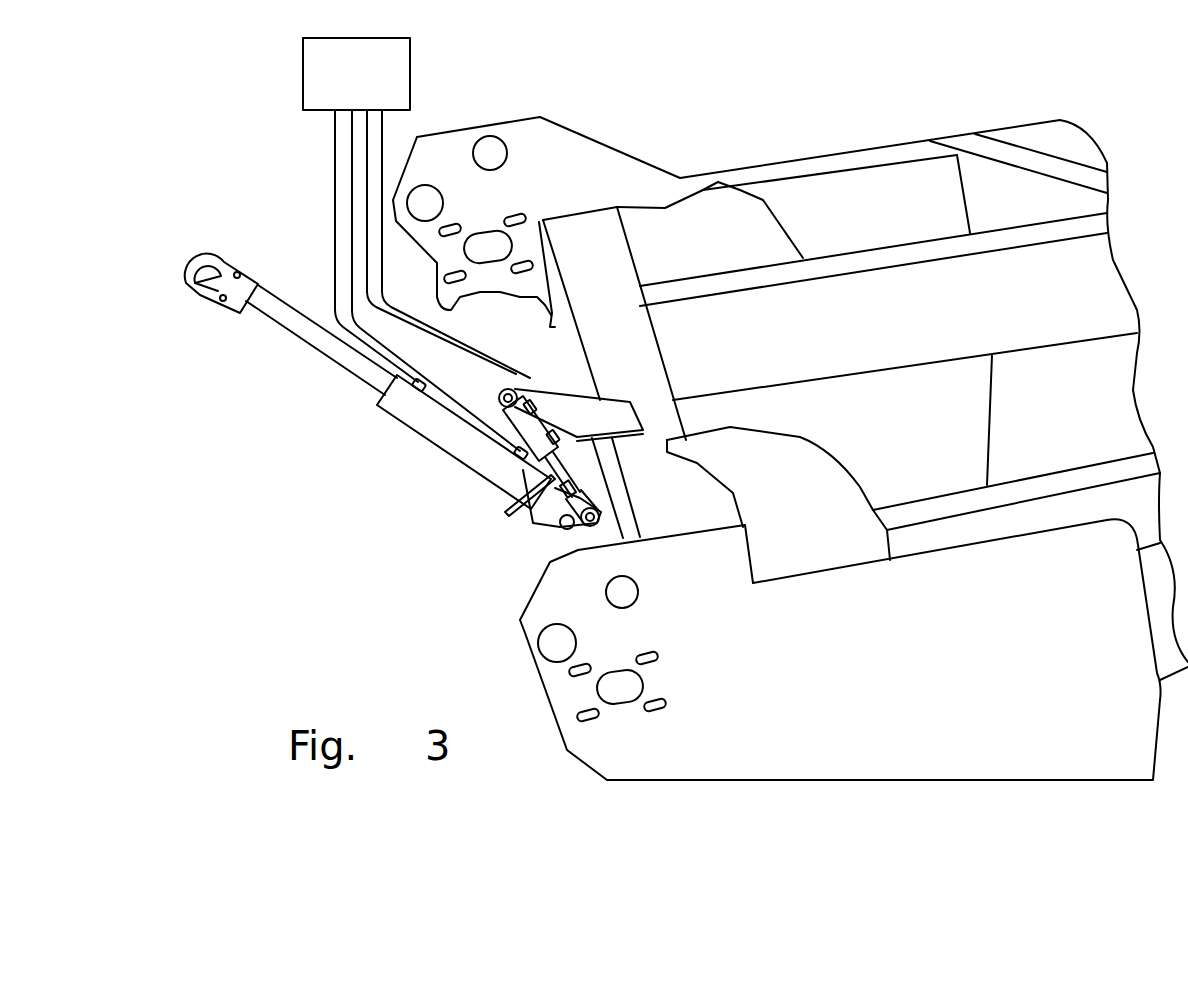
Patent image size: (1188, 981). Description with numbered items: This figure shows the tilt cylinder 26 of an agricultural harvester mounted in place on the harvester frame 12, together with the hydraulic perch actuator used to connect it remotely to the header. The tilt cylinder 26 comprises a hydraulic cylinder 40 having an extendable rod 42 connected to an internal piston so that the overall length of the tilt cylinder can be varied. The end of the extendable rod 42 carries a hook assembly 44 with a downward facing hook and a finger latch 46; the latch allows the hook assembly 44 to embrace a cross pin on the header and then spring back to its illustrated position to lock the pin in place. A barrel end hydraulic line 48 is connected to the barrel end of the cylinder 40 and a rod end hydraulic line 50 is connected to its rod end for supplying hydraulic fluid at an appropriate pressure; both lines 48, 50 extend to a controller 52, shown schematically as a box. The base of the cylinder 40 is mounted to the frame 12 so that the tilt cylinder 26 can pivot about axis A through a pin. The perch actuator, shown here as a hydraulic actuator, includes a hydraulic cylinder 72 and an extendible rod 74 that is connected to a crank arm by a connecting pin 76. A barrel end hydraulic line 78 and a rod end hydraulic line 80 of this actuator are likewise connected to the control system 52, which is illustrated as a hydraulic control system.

The frame 12 is at (810, 780).
The tilt cylinder 26 is at (354, 336).
The hydraulic cylinder 40 is at (440, 452).
The extendable rod 42 is at (312, 350).
The hook assembly 44 is at (201, 232).
The finger latch 46 is at (207, 293).
The barrel end hydraulic line 48 is at (350, 222).
The rod end hydraulic line 50 is at (335, 272).
The controller 52 is at (405, 55).
The hydraulic cylinder 72 is at (533, 433).
The extendible rod 74 is at (562, 475).
The connecting pin 76 is at (598, 526).
The barrel end hydraulic line 78 is at (386, 165).
The rod end hydraulic line 80 is at (371, 132).
The axis A is at (575, 537).